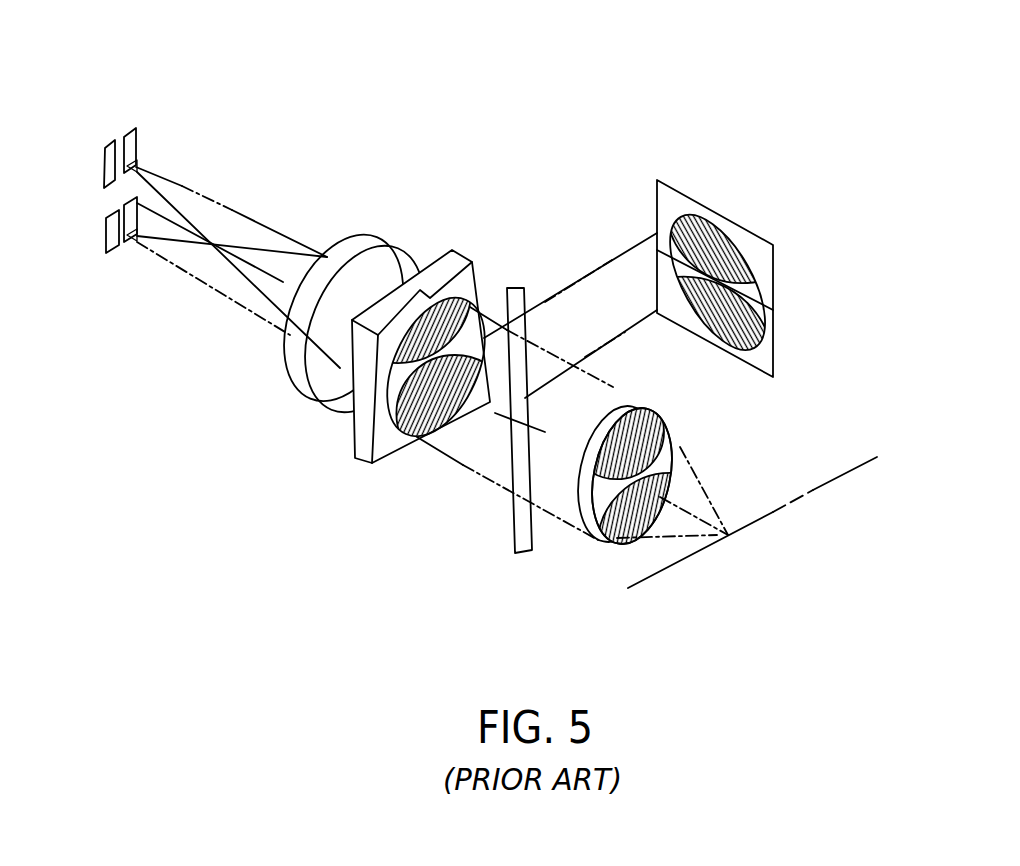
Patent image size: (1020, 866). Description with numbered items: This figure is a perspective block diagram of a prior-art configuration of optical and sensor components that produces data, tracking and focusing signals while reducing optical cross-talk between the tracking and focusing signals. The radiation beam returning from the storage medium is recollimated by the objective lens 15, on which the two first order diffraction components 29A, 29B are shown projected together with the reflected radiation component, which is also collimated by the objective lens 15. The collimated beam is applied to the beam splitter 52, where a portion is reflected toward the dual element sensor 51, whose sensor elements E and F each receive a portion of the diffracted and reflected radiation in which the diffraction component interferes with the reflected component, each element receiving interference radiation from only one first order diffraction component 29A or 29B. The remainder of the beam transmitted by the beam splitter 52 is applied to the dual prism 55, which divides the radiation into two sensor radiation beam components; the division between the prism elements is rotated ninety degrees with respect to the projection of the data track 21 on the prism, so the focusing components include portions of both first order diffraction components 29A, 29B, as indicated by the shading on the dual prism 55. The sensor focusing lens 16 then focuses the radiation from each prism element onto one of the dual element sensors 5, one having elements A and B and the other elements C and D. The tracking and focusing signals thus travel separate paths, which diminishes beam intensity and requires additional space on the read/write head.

The dual element sensors 5 is at (114, 98).
The objective lens 15 is at (585, 538).
The sensor focusing lens 16 is at (382, 238).
The data track 21 is at (830, 481).
The first order diffraction component 29A is at (443, 296).
The first order diffraction component 29B is at (413, 440).
The dual element sensor 51 is at (764, 234).
The beam splitter 52 is at (514, 552).
The dual prism 55 is at (471, 257).